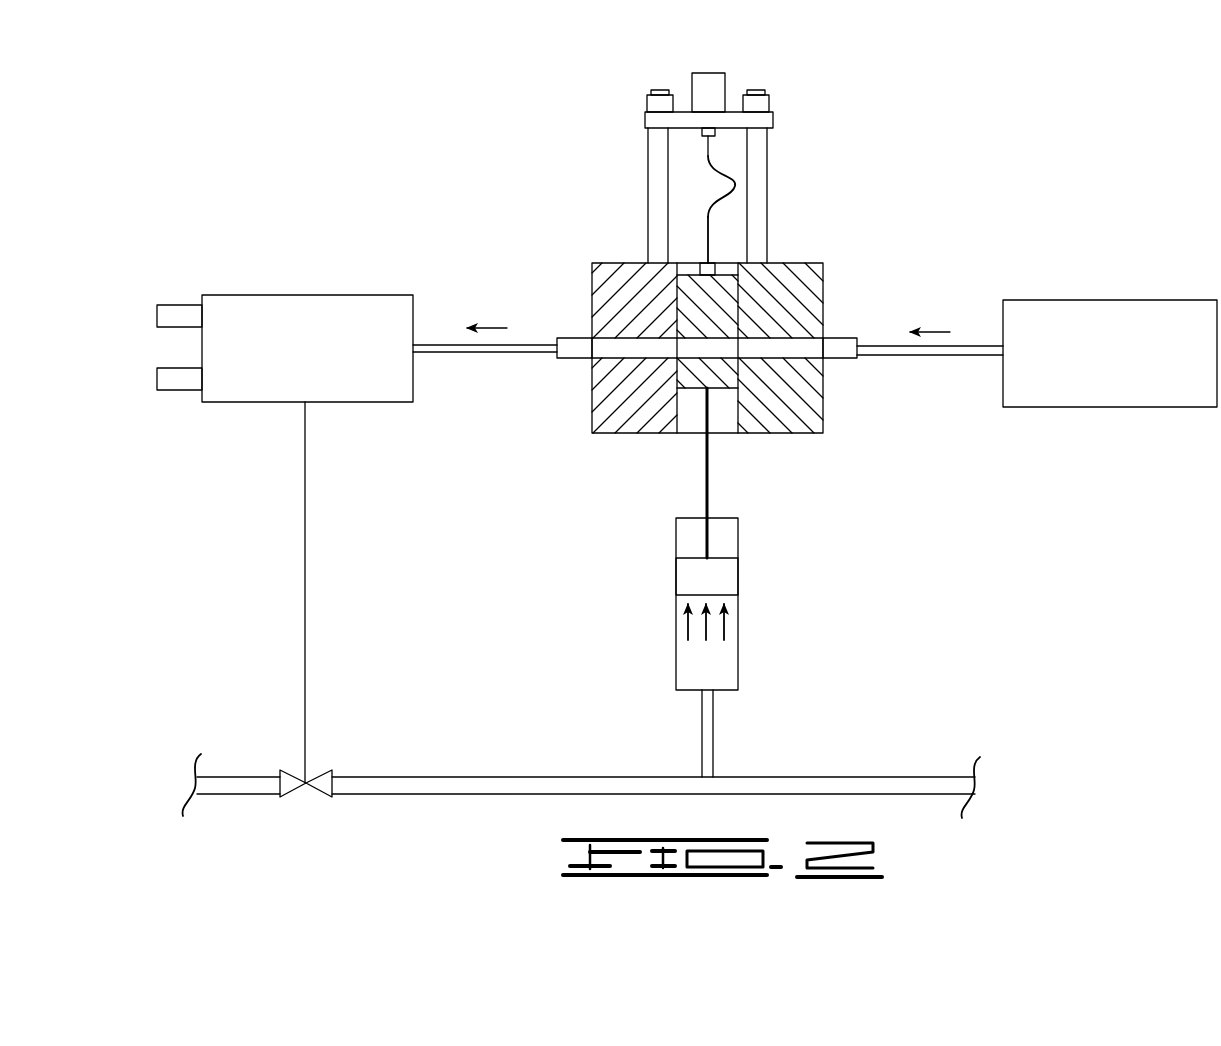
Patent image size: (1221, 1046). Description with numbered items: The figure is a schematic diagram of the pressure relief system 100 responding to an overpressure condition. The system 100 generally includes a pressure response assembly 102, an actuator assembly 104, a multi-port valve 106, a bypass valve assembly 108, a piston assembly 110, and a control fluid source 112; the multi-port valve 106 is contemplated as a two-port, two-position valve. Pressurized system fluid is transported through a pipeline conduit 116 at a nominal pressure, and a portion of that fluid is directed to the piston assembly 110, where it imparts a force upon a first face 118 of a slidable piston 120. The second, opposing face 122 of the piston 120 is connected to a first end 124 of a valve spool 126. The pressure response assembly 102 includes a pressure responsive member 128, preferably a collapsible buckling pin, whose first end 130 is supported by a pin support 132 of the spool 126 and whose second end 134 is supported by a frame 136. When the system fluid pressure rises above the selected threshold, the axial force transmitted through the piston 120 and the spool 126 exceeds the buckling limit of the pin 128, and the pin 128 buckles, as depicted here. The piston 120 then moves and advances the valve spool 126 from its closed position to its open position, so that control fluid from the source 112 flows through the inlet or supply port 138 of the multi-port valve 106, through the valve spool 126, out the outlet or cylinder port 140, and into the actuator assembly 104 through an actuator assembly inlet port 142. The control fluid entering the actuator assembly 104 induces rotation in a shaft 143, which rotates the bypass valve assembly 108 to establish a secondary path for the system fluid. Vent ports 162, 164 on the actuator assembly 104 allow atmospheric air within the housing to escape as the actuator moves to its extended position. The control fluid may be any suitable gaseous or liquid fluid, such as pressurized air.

The system 100 is at (968, 127).
The pressure response assembly 102 is at (863, 179).
The actuator assembly 104 is at (253, 295).
The multi-port valve 106 is at (603, 286).
The bypass valve assembly 108 is at (315, 773).
The piston assembly 110 is at (758, 585).
The control fluid source 112 is at (1057, 407).
The pipeline conduit 116 is at (797, 785).
The first face 118 is at (678, 600).
The slidable piston 120 is at (676, 575).
The second face 122 is at (695, 557).
The first end 124 is at (705, 390).
The valve spool 126 is at (728, 376).
The pressure responsive member 128 is at (708, 157).
The first end 130 is at (710, 243).
The pin support 132 is at (700, 265).
The second end 134 is at (706, 158).
The frame 136 is at (705, 127).
The inlet port 138 is at (840, 360).
The outlet port 140 is at (575, 359).
The actuator assembly inlet port 142 is at (413, 352).
The shaft 143 is at (306, 600).
The vent port 162 is at (157, 315).
The vent port 164 is at (157, 380).